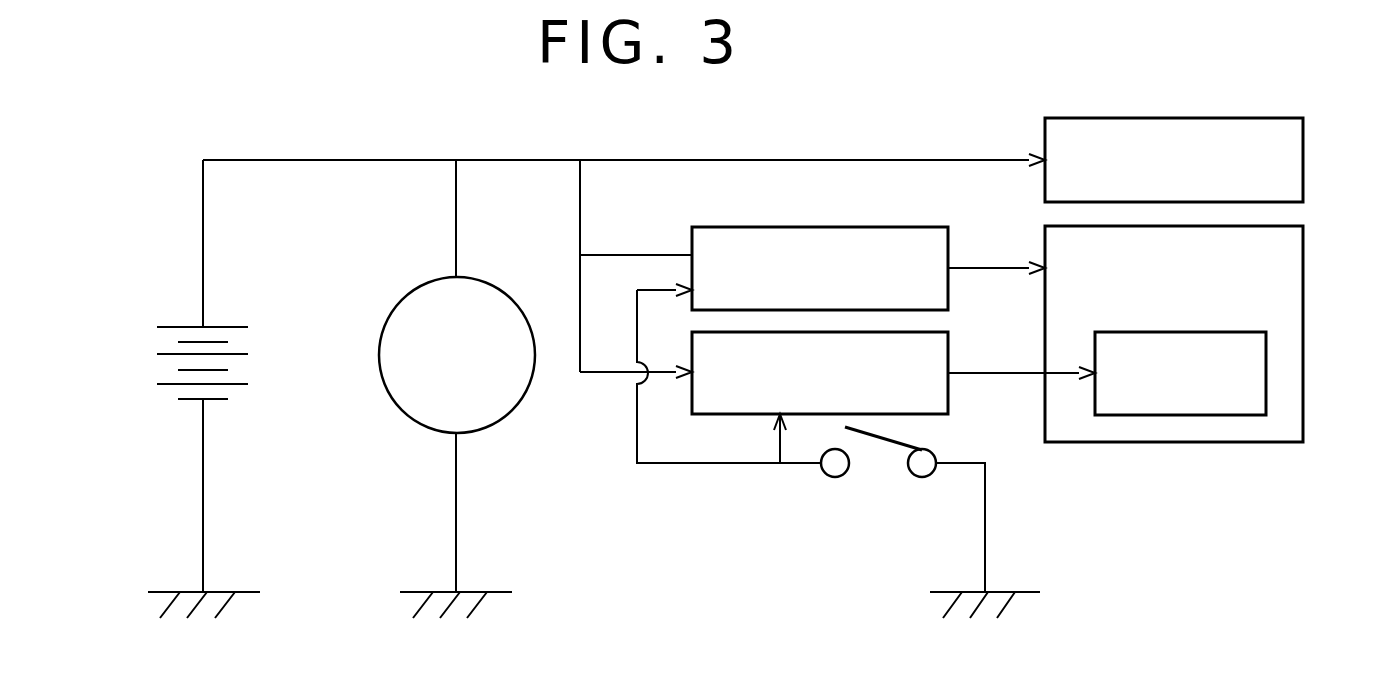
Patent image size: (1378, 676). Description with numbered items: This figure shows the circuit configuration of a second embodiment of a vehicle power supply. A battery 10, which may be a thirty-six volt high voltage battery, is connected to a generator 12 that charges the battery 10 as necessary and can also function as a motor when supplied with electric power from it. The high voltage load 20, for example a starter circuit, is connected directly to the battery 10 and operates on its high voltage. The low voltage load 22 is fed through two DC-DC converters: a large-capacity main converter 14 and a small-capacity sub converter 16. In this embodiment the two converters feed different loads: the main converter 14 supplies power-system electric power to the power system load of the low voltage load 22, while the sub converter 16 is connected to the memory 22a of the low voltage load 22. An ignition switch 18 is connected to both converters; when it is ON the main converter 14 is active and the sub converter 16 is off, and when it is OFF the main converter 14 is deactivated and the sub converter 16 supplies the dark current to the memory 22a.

The battery 10 is at (145, 363).
The generator 12 is at (395, 300).
The main converter 14 is at (868, 227).
The sub converter 16 is at (949, 392).
The ignition switch 18 is at (829, 492).
The high voltage load 20 is at (1192, 118).
The low voltage load 22 is at (1303, 347).
The memory 22a is at (1203, 415).